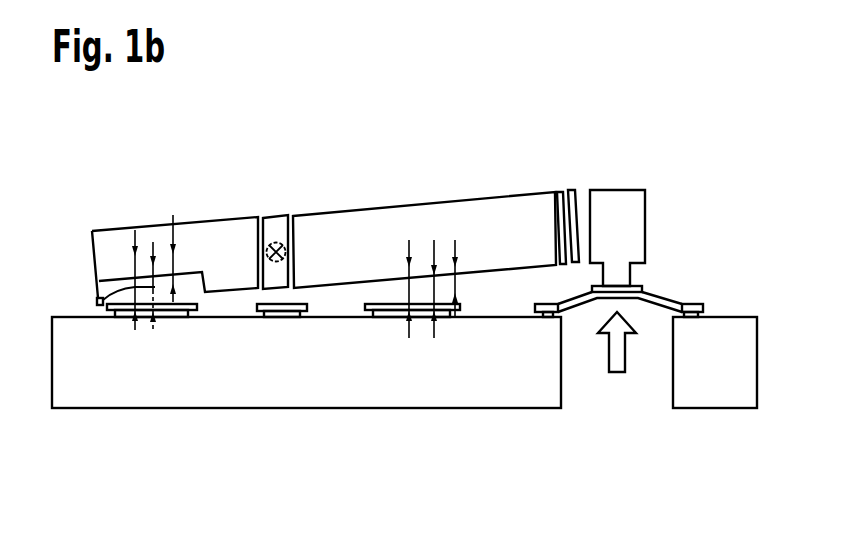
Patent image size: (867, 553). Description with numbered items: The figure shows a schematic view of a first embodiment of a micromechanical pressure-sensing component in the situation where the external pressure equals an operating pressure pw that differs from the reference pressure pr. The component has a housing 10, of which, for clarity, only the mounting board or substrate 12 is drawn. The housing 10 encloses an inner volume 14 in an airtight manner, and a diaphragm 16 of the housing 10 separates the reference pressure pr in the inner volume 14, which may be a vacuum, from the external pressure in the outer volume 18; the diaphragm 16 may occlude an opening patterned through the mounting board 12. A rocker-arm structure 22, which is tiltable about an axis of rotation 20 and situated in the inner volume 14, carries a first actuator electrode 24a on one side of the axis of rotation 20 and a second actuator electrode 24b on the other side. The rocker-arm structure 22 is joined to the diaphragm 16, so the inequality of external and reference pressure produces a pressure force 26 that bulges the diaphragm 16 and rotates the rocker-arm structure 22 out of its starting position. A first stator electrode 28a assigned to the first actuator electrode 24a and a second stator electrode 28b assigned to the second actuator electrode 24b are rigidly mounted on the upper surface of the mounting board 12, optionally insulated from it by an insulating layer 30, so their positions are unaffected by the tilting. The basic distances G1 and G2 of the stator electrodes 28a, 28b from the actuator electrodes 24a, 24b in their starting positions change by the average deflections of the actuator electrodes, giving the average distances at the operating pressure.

The housing 10 is at (343, 420).
The mounting board/substrate 12 is at (77, 395).
The inner volume 14 is at (750, 201).
The diaphragm 16 is at (665, 300).
The outer volume 18 is at (724, 487).
The axis of rotation 20 is at (280, 243).
The rocker-arm structure 22 is at (355, 198).
The first actuator electrode 24a is at (510, 212).
The second actuator electrode 24b is at (114, 240).
The pressure force 26 is at (618, 373).
The first stator electrode 28a is at (470, 306).
The second stator electrode 28b is at (197, 308).
The insulating layer 30 is at (458, 310).
The first average basic distance G1 is at (435, 326).
The second average basic distance G2 is at (97, 300).